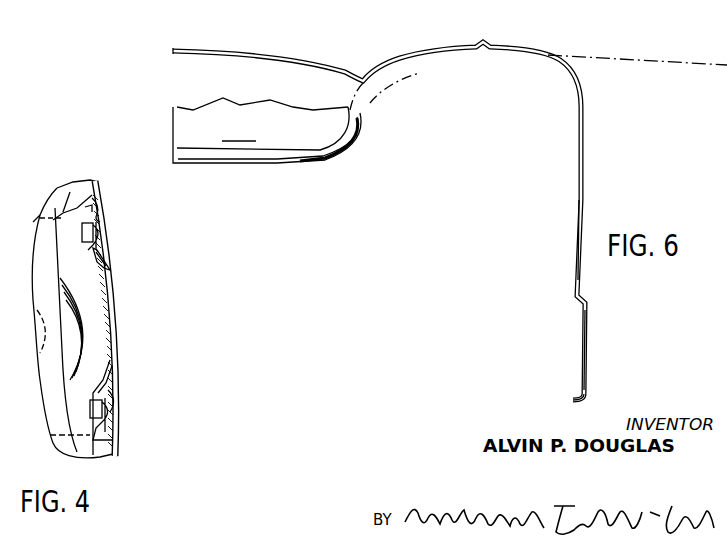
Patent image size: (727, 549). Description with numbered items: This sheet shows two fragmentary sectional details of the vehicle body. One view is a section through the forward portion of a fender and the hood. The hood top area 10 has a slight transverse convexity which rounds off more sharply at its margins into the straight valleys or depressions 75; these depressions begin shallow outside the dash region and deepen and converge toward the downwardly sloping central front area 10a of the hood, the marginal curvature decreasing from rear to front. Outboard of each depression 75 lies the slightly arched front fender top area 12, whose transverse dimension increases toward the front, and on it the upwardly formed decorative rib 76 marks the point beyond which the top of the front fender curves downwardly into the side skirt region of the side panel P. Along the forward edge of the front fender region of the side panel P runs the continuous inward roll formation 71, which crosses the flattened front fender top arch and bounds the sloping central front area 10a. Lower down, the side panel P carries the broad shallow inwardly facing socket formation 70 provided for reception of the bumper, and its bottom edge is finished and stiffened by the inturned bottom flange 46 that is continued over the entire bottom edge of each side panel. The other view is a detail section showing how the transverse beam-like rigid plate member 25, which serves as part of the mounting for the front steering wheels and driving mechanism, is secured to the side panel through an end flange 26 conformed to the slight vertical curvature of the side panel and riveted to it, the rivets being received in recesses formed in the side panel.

In FIG. 6, the hood top area 10 is at (262, 51).
In FIG. 6, the central front area of the hood 10a is at (267, 130).
In FIG. 6, the front fender top area 12 is at (441, 50).
In FIG. 6, the depression 75 is at (363, 79).
In FIG. 6, the decorative rib 76 is at (484, 44).
In FIG. 6, the inward roll formation 71 is at (336, 152).
In FIG. 6, the side panel P is at (587, 191).
In FIG. 6, the socket formation 70 is at (586, 353).
In FIG. 6, the bottom flange 46 is at (569, 401).
In FIG. 4, the plate member 25 is at (95, 294).
In FIG. 4, the end flange 26 is at (108, 263).